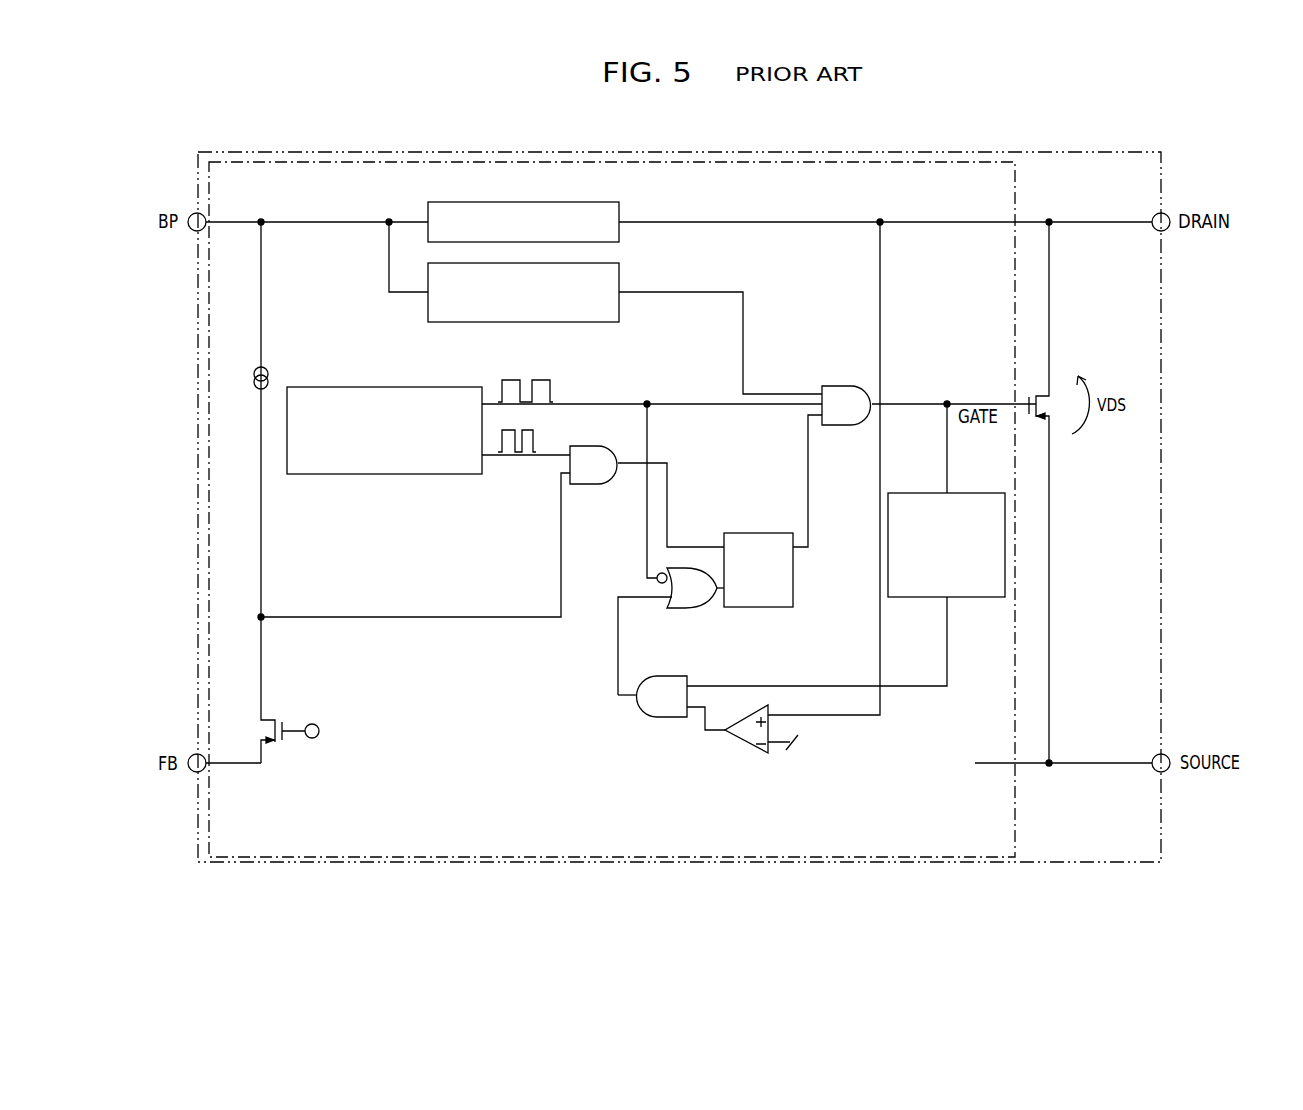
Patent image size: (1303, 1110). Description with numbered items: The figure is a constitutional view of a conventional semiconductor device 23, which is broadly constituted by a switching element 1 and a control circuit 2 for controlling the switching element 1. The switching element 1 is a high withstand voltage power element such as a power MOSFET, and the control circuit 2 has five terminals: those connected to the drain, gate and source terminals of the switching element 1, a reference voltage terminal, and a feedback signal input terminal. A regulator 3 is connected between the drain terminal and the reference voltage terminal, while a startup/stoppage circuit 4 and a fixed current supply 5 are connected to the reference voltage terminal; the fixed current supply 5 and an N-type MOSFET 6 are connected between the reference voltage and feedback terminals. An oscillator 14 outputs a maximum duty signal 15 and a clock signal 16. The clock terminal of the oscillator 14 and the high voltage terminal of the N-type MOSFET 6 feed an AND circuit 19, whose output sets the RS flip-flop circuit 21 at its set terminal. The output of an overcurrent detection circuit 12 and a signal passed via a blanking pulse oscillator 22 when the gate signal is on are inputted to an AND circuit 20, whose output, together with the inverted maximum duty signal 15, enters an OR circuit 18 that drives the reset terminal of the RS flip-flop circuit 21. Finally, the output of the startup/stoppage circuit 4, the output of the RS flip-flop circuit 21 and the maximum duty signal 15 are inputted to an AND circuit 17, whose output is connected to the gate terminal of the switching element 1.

The switching element 1 is at (1031, 394).
The control circuit 2 is at (1015, 210).
The regulator 3 is at (619, 210).
The startup/stoppage circuit 4 is at (619, 278).
The fixed current supply 5 is at (256, 378).
The N-type MOSFET 6 is at (280, 745).
The overcurrent detection circuit 12 is at (748, 748).
The oscillator 14 is at (394, 396).
The MAX DUTY signal 15 is at (560, 390).
The CLOCK signal 16 is at (542, 440).
The AND circuit 17 is at (838, 386).
The OR circuit 18 is at (702, 608).
The AND circuit 19 is at (598, 484).
The AND circuit 20 is at (648, 717).
The RS flip-flop circuit 21 is at (748, 533).
The blanking pulse oscillator 22 is at (973, 493).
The semiconductor device 23 is at (1161, 178).